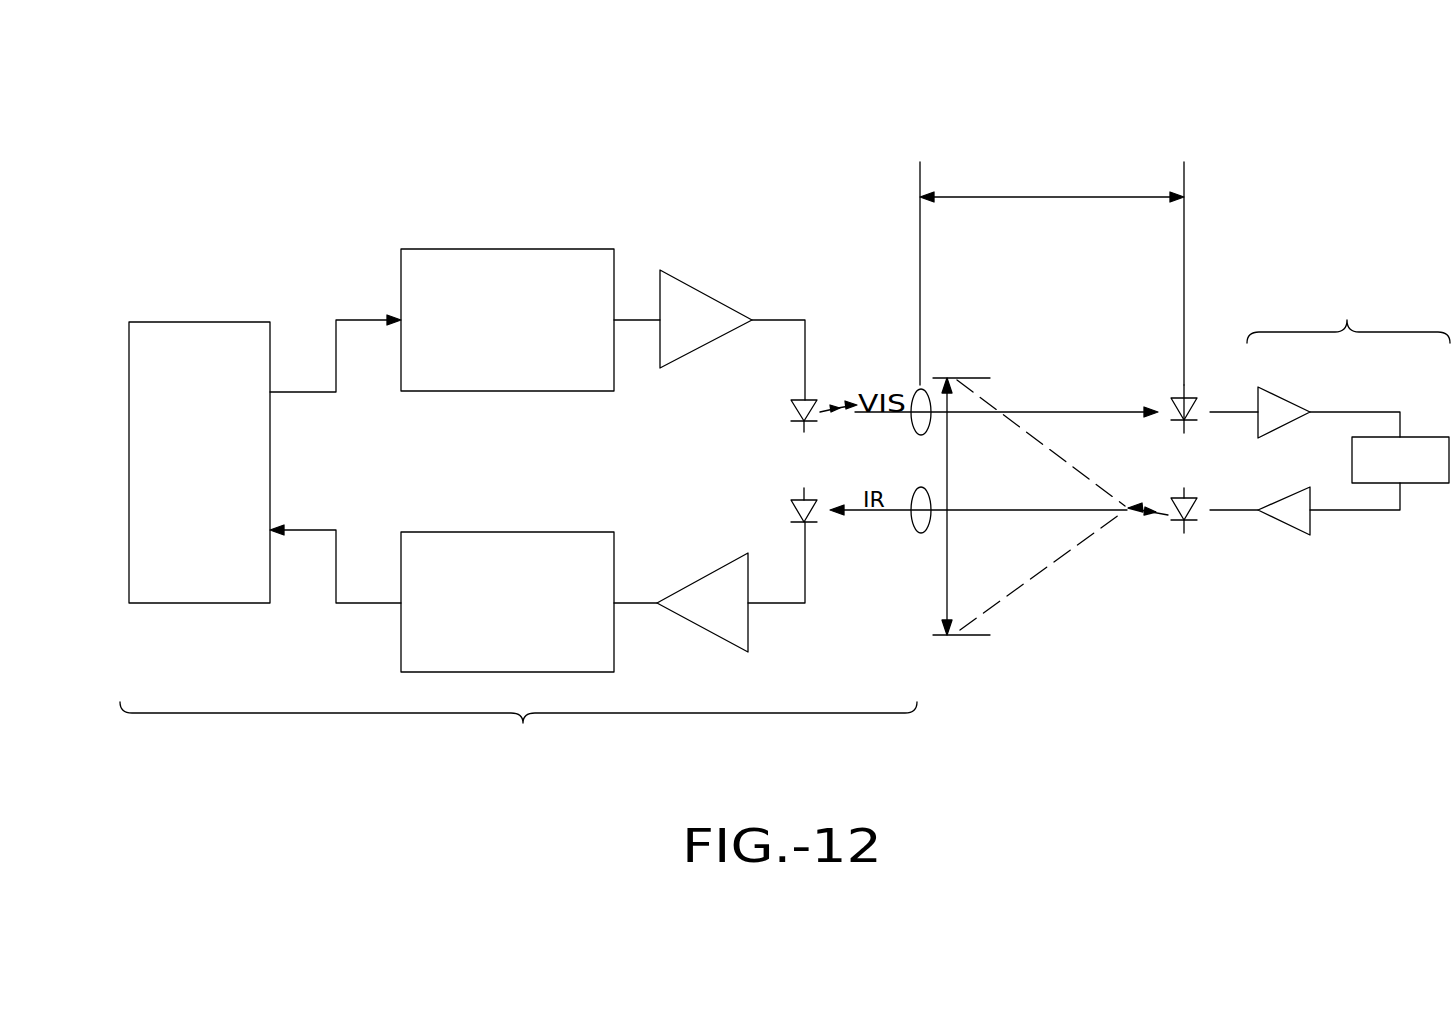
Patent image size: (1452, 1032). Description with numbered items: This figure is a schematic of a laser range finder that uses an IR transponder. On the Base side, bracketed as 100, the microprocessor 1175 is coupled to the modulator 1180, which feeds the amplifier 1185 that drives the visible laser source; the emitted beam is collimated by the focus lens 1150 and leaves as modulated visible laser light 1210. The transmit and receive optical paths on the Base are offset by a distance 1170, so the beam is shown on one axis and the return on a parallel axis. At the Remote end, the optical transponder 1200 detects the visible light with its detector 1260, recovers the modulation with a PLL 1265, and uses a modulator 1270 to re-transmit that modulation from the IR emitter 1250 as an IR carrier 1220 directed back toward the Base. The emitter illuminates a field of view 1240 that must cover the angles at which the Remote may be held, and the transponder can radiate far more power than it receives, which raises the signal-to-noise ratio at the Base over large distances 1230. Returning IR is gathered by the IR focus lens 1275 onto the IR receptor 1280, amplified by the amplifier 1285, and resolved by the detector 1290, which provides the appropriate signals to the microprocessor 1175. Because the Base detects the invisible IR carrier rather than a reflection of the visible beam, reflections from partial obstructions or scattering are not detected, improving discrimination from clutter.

The transceiver electronics module 100 is at (518, 728).
The focus lens 1150 is at (918, 388).
The distance 1170 is at (791, 403).
The microprocessor 1175 is at (193, 337).
The modulator 1180 is at (497, 260).
The amplifier 1185 is at (709, 295).
The optical transponder 1200 is at (1348, 315).
The modulated visible laser light 1210 is at (1073, 410).
The IR carrier 1220 is at (1080, 473).
The large distances 1230 is at (1053, 197).
The field of view 1240 is at (945, 558).
The IR emitter 1250 is at (1193, 512).
The detector 1260 is at (1278, 408).
The PLL 1265 is at (1425, 482).
The modulator 1270 is at (1297, 527).
The IR focus lens 1275 is at (918, 534).
The IR receptor 1280 is at (791, 510).
The amplifier 1285 is at (705, 613).
The detector 1290 is at (538, 542).